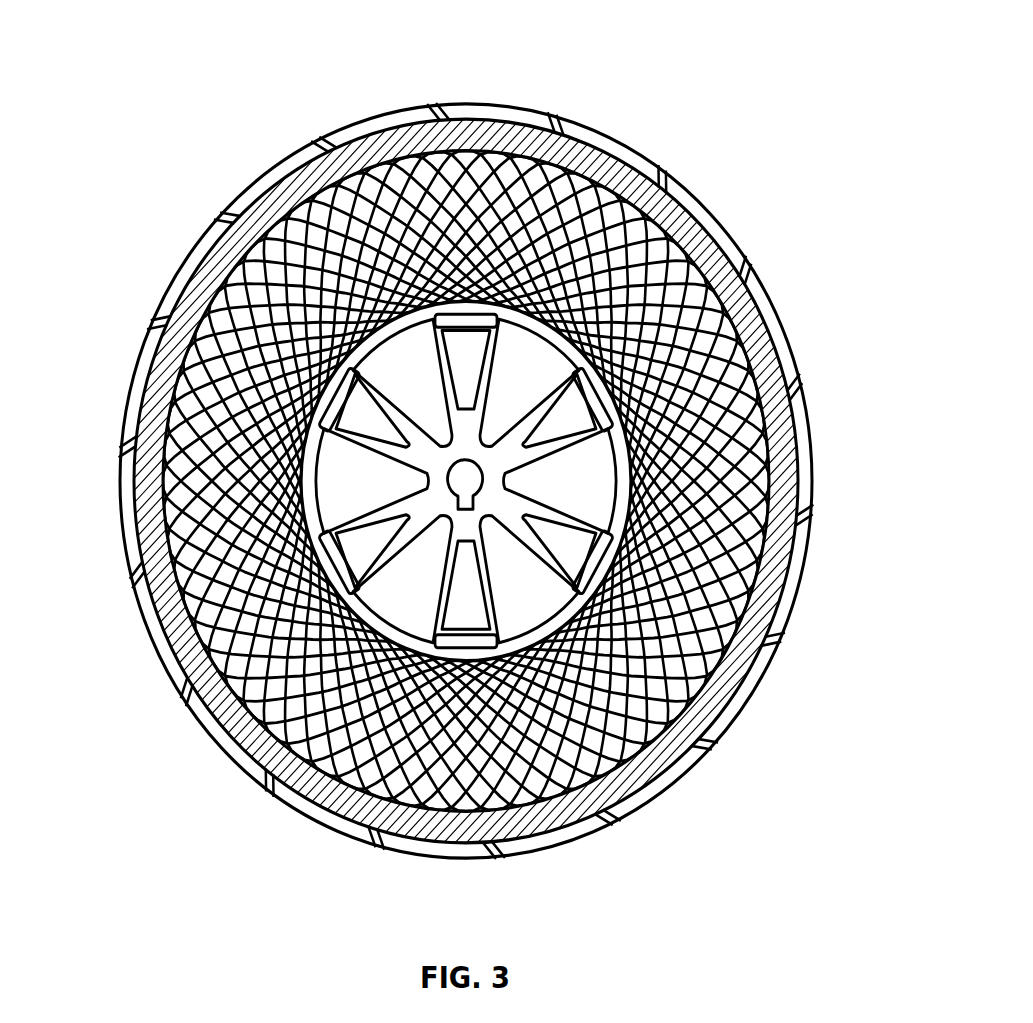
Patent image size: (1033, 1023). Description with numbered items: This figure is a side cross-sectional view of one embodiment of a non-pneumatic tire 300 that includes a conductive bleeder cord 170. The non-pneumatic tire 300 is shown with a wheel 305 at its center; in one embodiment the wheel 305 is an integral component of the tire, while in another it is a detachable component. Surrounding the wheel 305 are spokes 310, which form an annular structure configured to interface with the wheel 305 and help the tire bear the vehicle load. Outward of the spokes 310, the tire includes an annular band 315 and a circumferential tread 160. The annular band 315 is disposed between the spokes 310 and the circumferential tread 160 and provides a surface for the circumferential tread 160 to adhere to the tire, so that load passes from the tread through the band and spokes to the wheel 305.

The non-pneumatic tire 300 is at (160, 52).
The circumferential tread 160 is at (272, 178).
The conductive bleeder cord 170 is at (190, 707).
The wheel 305 is at (690, 328).
The spokes 310 is at (170, 398).
The annular band 315 is at (610, 168).